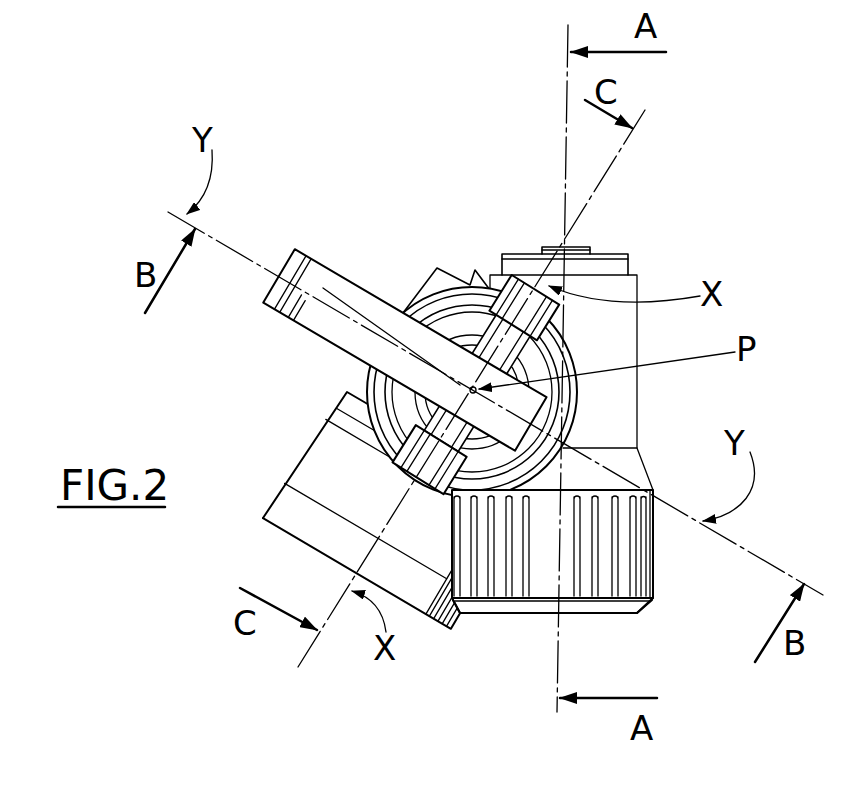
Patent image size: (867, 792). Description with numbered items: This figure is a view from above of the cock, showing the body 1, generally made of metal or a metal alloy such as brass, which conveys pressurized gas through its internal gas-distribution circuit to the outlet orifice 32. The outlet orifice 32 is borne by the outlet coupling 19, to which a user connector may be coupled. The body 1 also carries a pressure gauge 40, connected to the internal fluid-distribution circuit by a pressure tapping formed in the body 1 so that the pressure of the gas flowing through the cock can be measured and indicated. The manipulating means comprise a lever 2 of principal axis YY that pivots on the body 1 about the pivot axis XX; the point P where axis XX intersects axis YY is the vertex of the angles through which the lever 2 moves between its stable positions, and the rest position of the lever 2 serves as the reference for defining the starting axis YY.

The body 1 is at (445, 295).
The lever 2 is at (356, 306).
The outlet coupling 19 is at (658, 543).
The outlet orifice 32 is at (640, 618).
The pressure gauge 40 is at (340, 497).